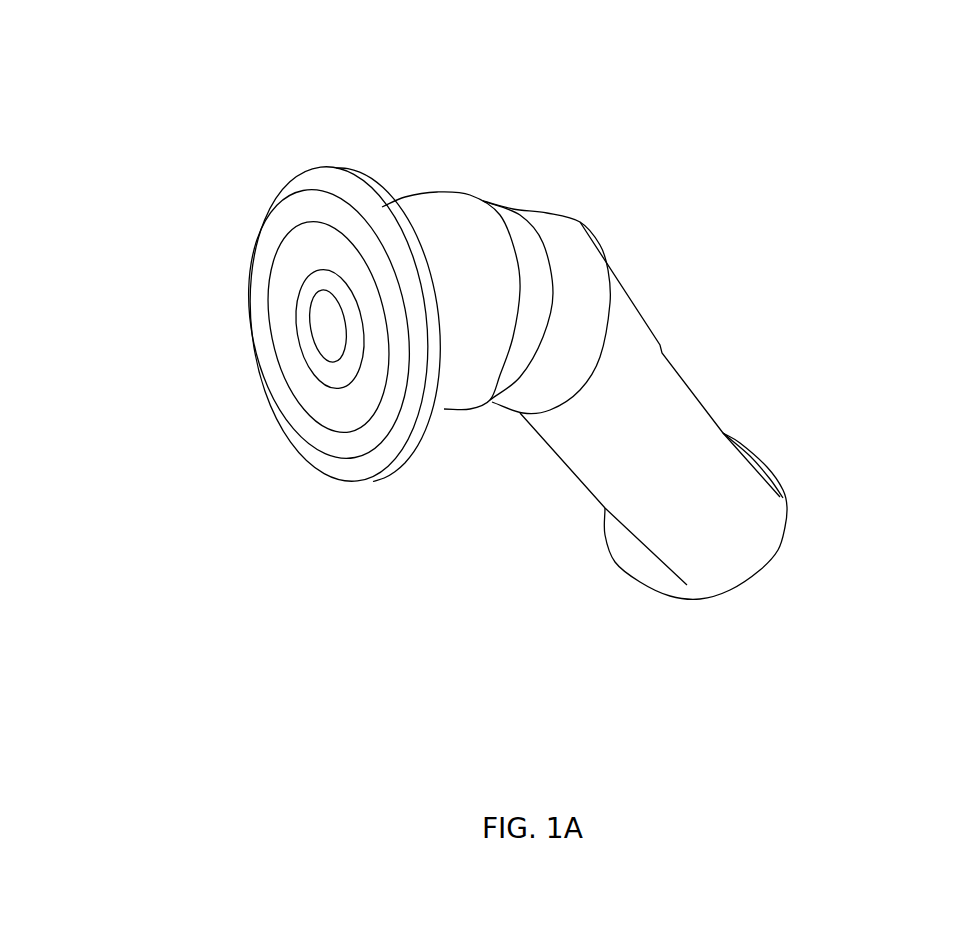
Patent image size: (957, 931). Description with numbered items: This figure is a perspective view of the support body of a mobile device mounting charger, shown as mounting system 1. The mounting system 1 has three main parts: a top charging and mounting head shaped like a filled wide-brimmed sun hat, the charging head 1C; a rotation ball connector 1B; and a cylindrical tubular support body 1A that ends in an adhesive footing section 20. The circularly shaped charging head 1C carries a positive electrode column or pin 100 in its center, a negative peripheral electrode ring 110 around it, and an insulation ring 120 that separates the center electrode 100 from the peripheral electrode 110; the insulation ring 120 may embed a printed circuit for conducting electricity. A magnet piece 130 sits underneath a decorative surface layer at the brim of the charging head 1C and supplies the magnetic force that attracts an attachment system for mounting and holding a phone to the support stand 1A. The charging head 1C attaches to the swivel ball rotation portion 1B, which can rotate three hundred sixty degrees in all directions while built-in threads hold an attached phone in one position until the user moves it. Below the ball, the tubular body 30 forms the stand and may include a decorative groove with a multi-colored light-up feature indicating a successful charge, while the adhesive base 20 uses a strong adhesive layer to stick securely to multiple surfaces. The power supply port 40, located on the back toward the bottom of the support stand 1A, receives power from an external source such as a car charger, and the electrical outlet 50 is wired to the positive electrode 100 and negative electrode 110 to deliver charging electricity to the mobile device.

The mounting system 1 is at (820, 107).
The cylindrical tubular support body 1A is at (715, 471).
The rotation ball connector 1B is at (463, 270).
The charging head 1C is at (380, 215).
The adhesive footing section 20 is at (758, 557).
The tubular body 30 is at (587, 485).
The power supply port 40 is at (735, 440).
The electrical outlet 50 is at (682, 376).
The positive electrode column 100 is at (327, 323).
The negative peripheral electrode ring 110 is at (376, 390).
The insulation ring 120 is at (320, 283).
The magnet piece 130 is at (388, 462).